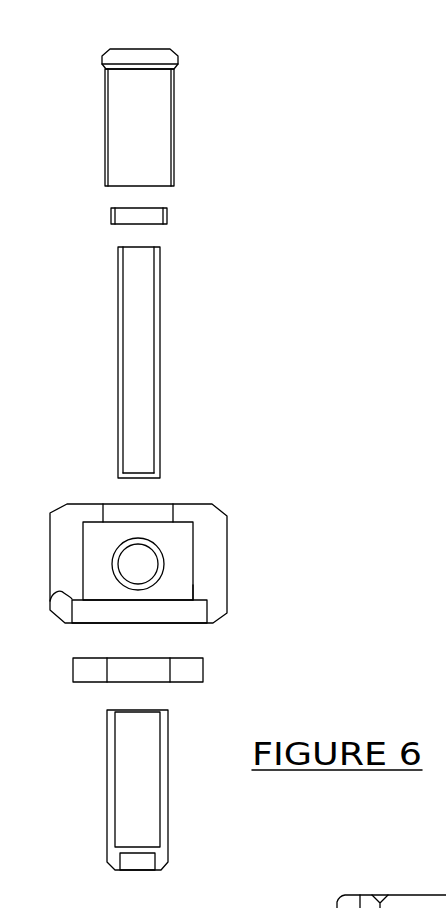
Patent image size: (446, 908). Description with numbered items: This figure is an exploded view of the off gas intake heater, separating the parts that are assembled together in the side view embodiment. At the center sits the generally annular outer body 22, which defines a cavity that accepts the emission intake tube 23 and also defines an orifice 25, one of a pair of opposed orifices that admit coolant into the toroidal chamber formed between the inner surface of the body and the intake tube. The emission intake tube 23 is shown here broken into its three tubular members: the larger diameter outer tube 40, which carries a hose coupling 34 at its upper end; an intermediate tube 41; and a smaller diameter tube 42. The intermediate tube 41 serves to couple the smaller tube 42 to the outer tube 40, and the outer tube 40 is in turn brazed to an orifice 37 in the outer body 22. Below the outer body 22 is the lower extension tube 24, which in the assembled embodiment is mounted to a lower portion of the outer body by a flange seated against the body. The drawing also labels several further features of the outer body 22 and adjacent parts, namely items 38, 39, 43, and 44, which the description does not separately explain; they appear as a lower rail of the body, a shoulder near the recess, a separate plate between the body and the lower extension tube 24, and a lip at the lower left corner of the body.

The outer body 22 is at (217, 548).
The emission intake tube 23 is at (254, 162).
The lower extension tube 24 is at (84, 788).
The orifice 25 is at (141, 561).
The hose coupling 34 is at (163, 60).
The orifice 37 is at (173, 504).
The rail 38 is at (207, 623).
The shoulder 39 is at (193, 591).
The outer tube 40 is at (173, 163).
The intermediate tube 41 is at (168, 218).
The tube 42 is at (160, 392).
The plate 43 is at (193, 677).
The lip 44 is at (52, 612).